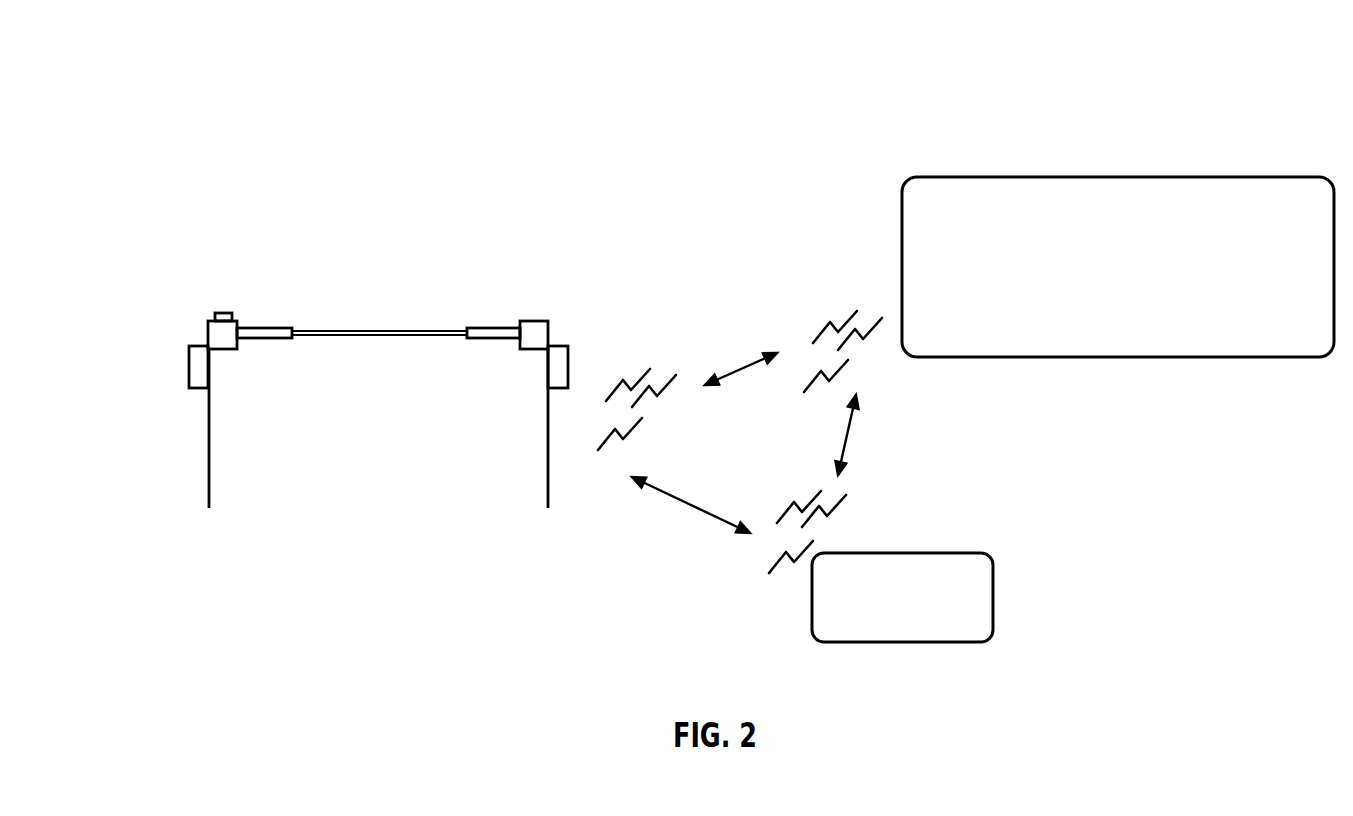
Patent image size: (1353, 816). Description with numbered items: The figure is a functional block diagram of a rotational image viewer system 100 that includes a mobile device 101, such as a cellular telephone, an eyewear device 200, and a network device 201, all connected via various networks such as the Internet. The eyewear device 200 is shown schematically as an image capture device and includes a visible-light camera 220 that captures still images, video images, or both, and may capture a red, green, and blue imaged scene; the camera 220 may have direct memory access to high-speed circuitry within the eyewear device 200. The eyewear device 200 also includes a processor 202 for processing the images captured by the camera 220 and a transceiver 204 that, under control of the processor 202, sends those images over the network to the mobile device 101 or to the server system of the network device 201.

The rotational image viewer system 100 is at (290, 87).
The mobile device 101 is at (1203, 118).
The eyewear device 200 is at (540, 263).
The network device 201 is at (963, 518).
The processor 202 is at (190, 367).
The transceiver 204 is at (568, 359).
The visible-light camera 220 is at (223, 313).